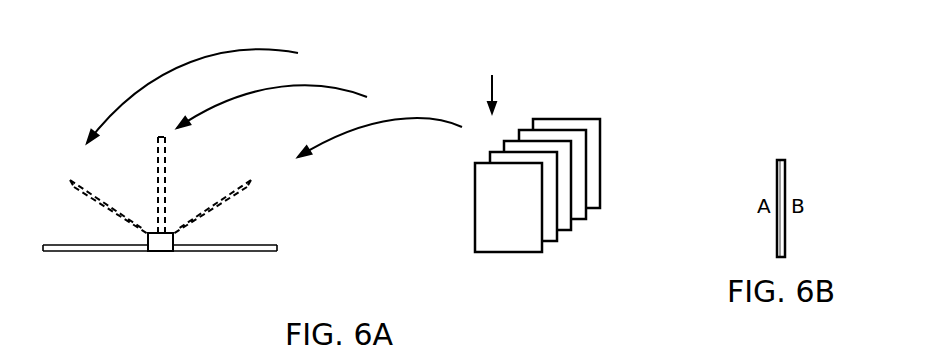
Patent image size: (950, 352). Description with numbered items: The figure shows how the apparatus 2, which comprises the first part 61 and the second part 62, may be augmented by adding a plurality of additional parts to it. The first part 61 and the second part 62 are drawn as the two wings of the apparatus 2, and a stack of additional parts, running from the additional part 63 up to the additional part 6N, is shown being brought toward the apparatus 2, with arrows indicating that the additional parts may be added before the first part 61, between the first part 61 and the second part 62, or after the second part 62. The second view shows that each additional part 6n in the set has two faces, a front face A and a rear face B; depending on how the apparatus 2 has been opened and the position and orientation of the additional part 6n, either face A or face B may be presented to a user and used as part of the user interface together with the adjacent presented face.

In FIG. 6A, the apparatus 2 is at (132, 268).
In FIG. 6A, the first part 61 is at (75, 252).
In FIG. 6A, the second part 62 is at (232, 252).
In FIG. 6A, the additional part 63 is at (507, 252).
In FIG. 6A, the additional part 6N is at (602, 182).
In FIG. 6B, the additional part 6n is at (782, 160).